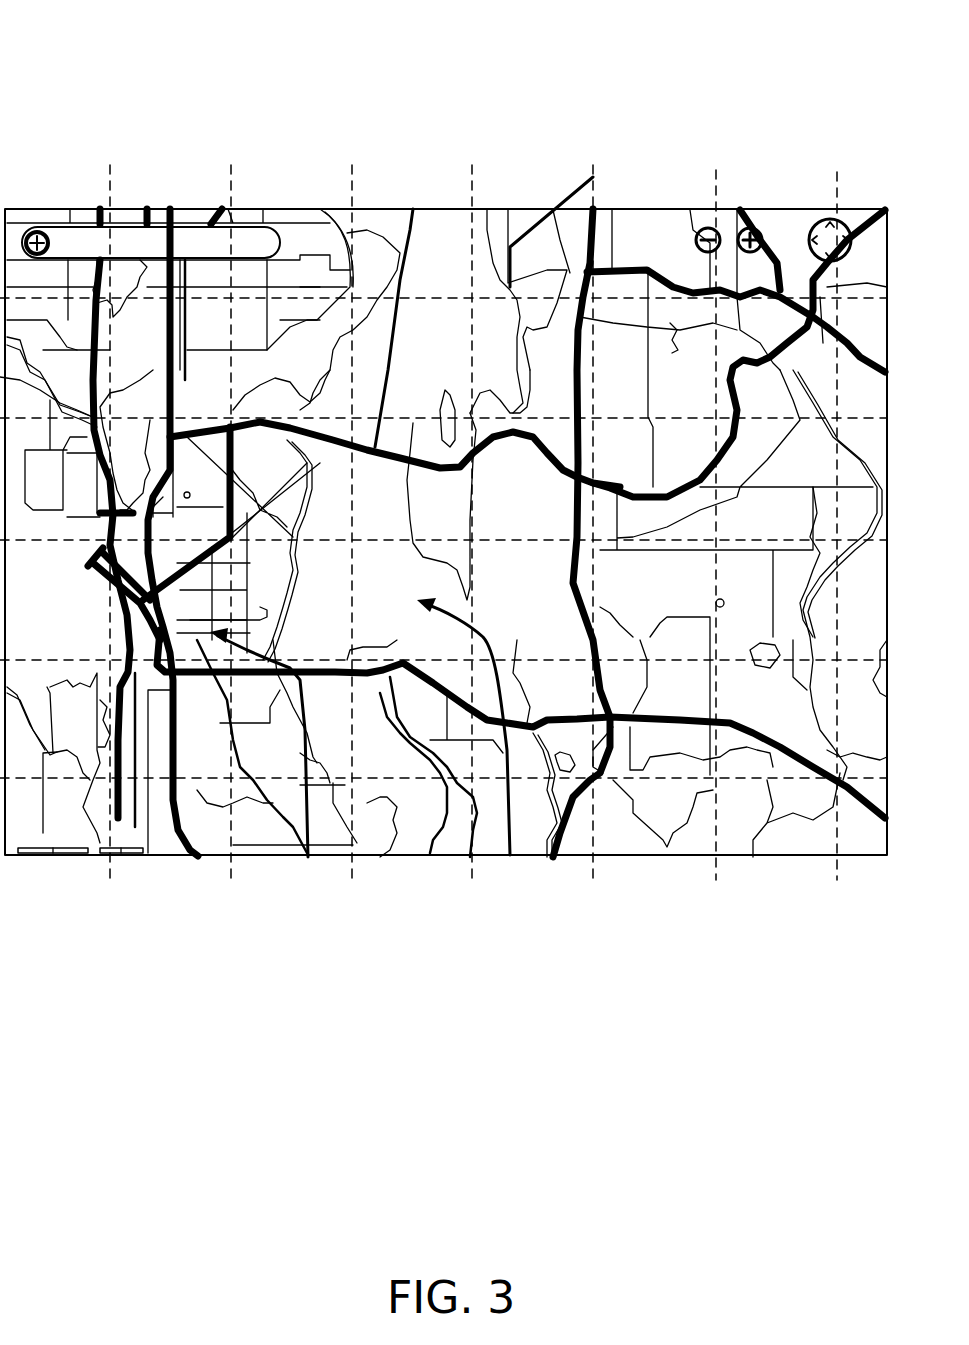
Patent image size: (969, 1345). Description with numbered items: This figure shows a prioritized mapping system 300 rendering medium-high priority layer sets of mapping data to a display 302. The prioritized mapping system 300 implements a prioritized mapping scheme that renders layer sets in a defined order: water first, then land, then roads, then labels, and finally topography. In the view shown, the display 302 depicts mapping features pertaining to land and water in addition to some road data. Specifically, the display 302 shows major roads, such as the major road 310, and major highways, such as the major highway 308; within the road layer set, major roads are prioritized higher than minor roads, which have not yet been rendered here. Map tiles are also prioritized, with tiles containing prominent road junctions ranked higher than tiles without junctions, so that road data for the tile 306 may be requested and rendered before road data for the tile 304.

The prioritized mapping system 300 is at (128, 74).
The display 302 is at (647, 209).
The tile 304 is at (510, 855).
The tile 306 is at (308, 855).
The major highway 308 is at (413, 209).
The major road 310 is at (593, 177).